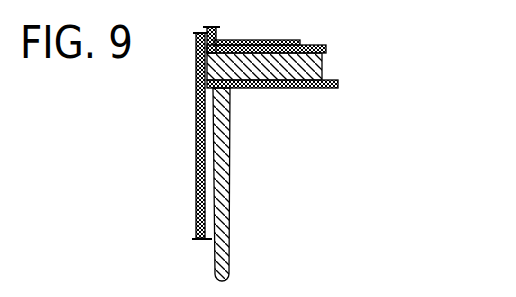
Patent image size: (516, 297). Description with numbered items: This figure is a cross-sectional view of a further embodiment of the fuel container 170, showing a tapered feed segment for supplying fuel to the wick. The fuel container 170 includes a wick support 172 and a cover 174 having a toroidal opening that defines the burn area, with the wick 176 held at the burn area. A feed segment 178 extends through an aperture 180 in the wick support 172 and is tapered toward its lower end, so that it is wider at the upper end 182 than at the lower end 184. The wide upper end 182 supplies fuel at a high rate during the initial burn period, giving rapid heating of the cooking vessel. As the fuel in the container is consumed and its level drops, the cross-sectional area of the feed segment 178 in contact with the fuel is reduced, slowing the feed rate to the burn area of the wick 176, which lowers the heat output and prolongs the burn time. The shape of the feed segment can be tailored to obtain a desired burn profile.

The fuel container 170 is at (195, 183).
The wick support 172 is at (330, 89).
The cover 174 is at (312, 46).
The wick 176 is at (315, 68).
The feed segment 178 is at (229, 192).
The aperture 180 is at (203, 103).
The upper end 182 is at (230, 103).
The lower end 184 is at (229, 258).